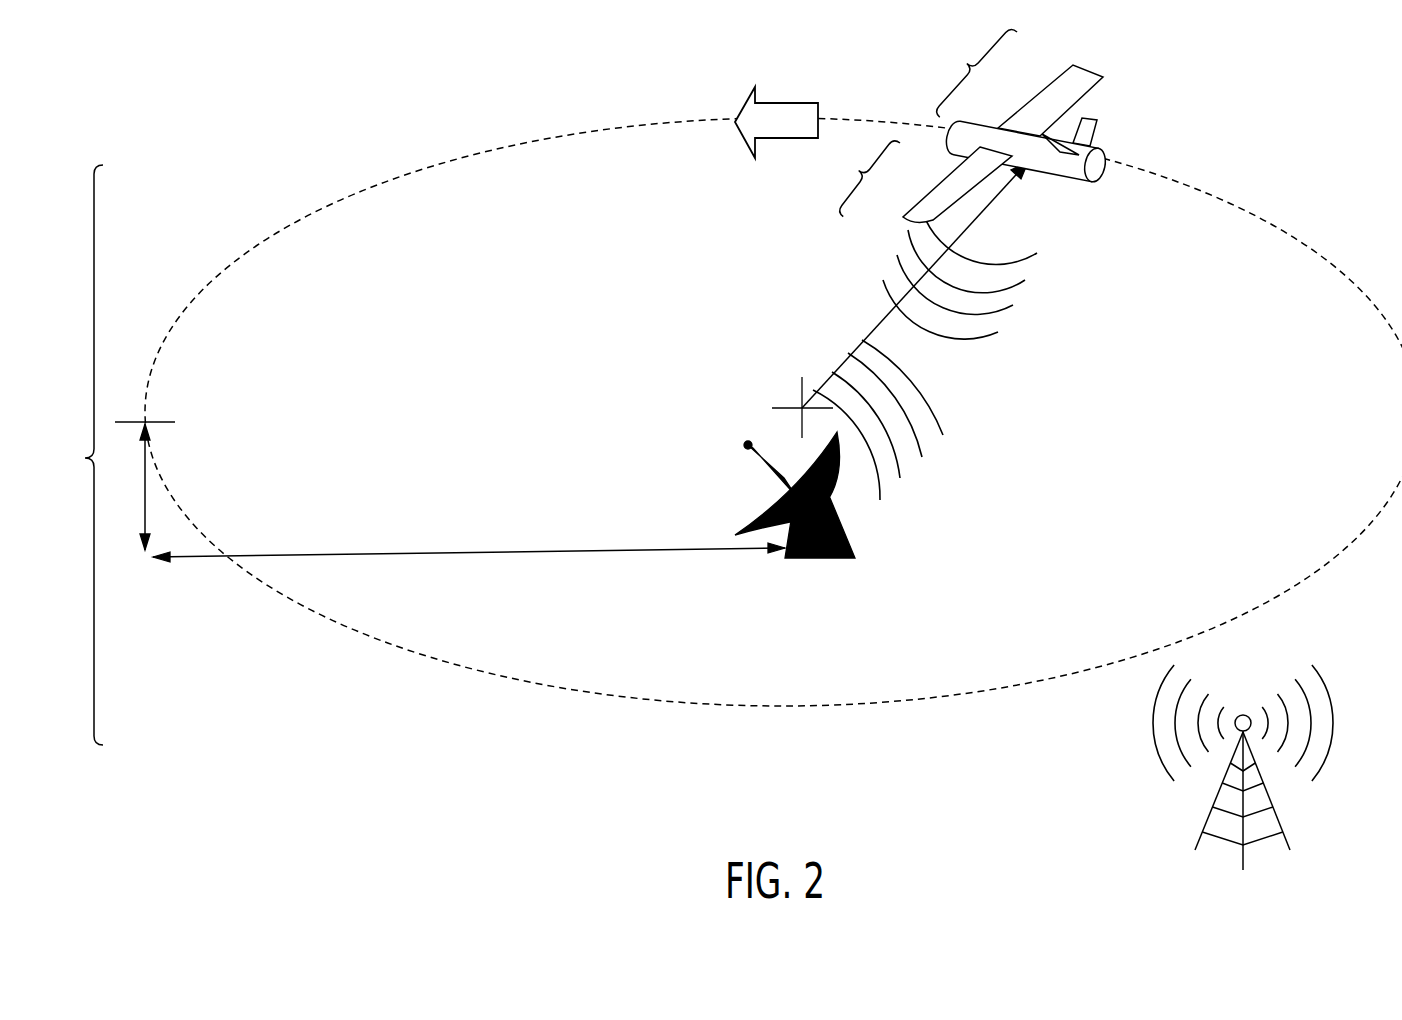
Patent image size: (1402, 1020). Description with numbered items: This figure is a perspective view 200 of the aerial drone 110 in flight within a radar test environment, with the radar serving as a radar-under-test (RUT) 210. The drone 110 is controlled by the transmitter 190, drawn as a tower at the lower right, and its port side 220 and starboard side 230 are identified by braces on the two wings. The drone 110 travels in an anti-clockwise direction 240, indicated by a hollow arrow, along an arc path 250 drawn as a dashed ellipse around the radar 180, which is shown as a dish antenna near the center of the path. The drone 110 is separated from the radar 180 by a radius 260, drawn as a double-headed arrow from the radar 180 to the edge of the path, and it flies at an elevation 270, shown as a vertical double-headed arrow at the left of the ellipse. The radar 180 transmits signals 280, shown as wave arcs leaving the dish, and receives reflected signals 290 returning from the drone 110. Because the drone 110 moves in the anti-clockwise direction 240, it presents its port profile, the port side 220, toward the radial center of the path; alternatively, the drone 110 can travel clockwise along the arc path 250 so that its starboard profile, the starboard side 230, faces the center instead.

The perspective view 200 is at (200, 131).
The arc path 250 is at (458, 160).
The anti-clockwise direction 240 is at (776, 122).
The radar-under-test (RUT) 210 is at (74, 455).
The elevation 270 is at (147, 505).
The radius 260 is at (197, 558).
The radar 180 is at (822, 558).
The transmitted signals 280 is at (945, 423).
The reflected signals 290 is at (1037, 257).
The aerial drone 110 is at (1100, 183).
The starboard side 230 is at (972, 69).
The port side 220 is at (865, 172).
The transmitter 190 is at (1209, 817).